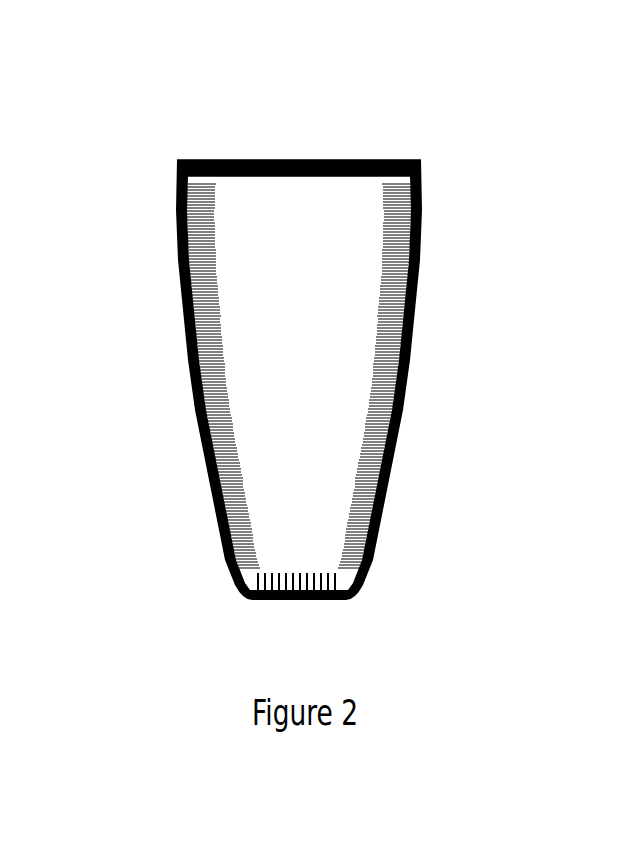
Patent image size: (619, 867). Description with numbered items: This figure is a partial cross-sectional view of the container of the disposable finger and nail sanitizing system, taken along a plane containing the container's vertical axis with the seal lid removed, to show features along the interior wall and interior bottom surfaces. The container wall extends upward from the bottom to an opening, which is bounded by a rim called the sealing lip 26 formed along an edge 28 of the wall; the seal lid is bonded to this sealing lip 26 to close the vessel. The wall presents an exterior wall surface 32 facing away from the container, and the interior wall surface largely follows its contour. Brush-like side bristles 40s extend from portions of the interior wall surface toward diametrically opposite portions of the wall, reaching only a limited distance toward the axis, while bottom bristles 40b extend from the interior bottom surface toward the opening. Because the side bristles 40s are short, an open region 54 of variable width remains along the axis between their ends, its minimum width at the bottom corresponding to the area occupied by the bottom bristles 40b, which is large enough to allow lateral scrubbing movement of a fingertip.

The sealing lip 26 is at (185, 160).
The edge 28 is at (177, 175).
The exterior wall surface 32 is at (405, 397).
The side bristles 40s is at (213, 308).
The bottom bristles 40b is at (355, 582).
The open region 54 is at (299, 376).